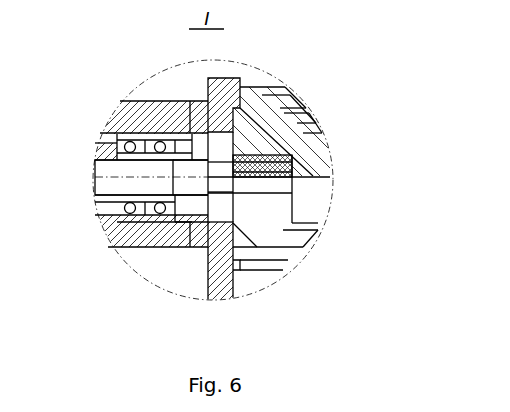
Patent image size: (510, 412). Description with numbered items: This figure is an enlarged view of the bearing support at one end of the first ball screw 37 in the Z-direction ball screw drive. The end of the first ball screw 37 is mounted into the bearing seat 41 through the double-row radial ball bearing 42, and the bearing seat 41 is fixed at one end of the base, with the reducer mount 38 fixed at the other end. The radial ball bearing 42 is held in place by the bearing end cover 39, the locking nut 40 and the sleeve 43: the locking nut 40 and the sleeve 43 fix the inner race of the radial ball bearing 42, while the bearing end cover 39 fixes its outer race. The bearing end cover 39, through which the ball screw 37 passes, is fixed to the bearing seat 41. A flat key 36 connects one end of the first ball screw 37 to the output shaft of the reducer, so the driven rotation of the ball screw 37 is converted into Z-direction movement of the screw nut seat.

The flat key 36 is at (253, 165).
The first ball screw 37 is at (230, 186).
The reducer mount 38 is at (225, 273).
The bearing end cover 39 is at (195, 228).
The locking nut 40 is at (176, 225).
The bearing seat 41 is at (163, 229).
The radial ball bearing 42 is at (132, 202).
The sleeve 43 is at (107, 200).